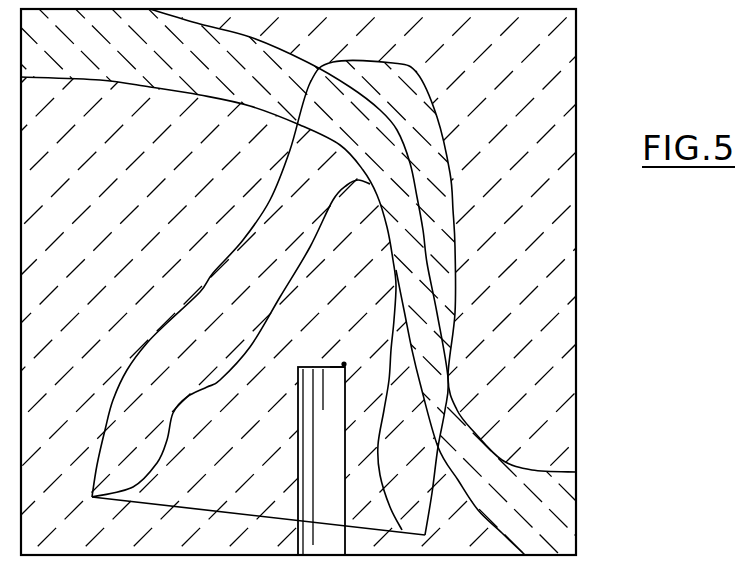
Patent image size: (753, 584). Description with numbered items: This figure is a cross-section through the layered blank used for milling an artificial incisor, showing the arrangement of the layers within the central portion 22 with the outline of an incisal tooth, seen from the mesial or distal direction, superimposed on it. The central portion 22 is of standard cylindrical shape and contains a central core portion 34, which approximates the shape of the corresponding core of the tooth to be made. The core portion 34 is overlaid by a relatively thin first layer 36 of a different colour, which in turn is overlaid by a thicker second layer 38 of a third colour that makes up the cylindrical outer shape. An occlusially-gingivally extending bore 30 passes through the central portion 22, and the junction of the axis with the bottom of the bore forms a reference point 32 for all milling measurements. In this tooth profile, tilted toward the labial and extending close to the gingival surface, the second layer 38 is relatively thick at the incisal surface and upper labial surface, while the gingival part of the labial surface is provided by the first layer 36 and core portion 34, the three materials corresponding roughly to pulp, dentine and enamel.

The central portion 22 is at (569, 43).
The bore 30 is at (327, 540).
The reference point 32 is at (344, 364).
The central core portion 34 is at (452, 507).
The first layer 36 is at (427, 333).
The second layer 38 is at (445, 248).